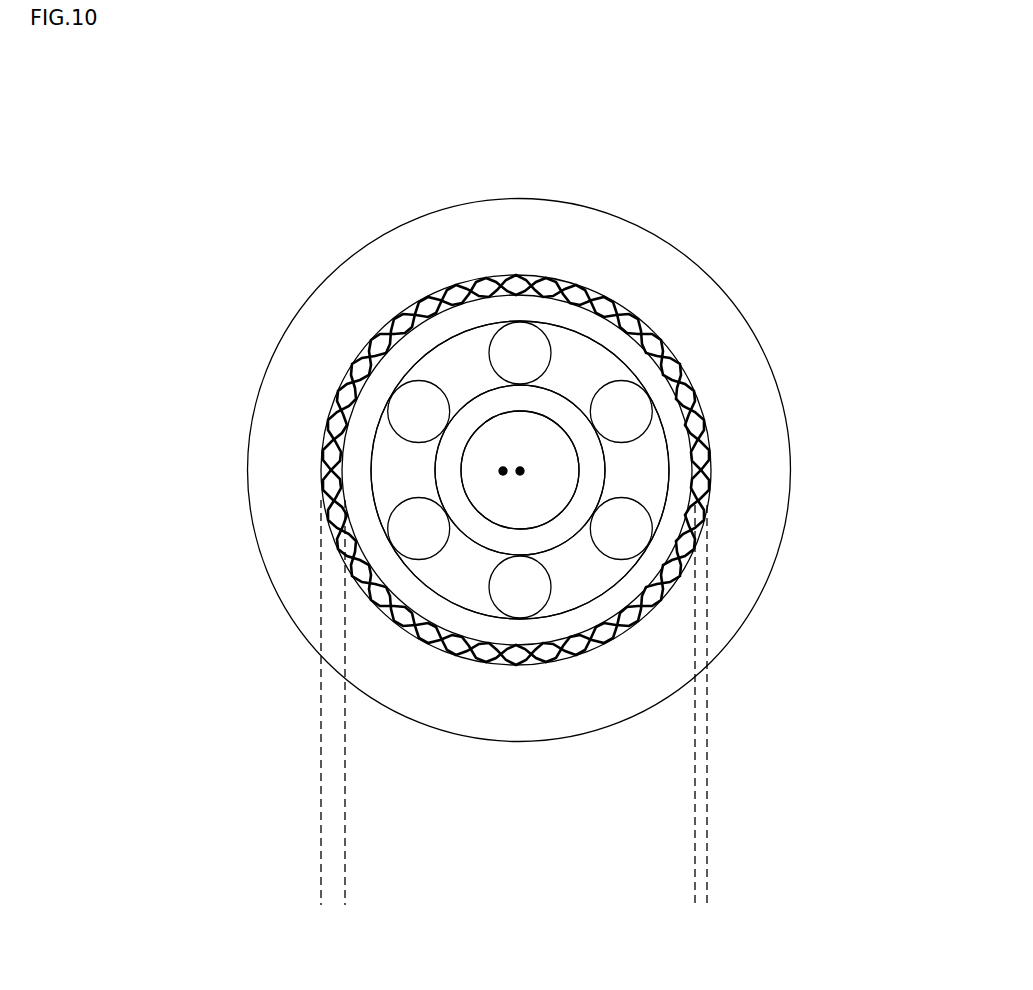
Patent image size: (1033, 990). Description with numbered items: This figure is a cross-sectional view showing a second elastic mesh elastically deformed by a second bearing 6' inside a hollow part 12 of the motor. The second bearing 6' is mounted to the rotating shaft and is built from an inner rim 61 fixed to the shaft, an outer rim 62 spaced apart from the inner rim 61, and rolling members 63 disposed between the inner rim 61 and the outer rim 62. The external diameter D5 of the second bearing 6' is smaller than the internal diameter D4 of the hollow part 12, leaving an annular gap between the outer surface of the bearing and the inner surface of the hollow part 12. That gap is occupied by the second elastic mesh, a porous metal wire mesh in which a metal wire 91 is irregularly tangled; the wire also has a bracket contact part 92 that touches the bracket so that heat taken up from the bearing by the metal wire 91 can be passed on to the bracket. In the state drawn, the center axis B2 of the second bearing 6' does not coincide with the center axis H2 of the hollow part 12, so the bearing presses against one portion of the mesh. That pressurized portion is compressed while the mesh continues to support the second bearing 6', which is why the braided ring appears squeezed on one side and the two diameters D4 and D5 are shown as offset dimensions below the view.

The hollow part 12 is at (775, 447).
The second bearing 6' is at (520, 344).
The inner rim 61 is at (561, 408).
The outer rim 62 is at (467, 318).
The rolling member 63 is at (520, 338).
The metal wire 91 is at (322, 445).
The bracket contact part 92 is at (322, 486).
The center axis of the hollow part H2 is at (503, 476).
The center axis of the second bearing B2 is at (520, 476).
The internal diameter of the hollow part D4 is at (695, 896).
The external diameter of the second bearing D5 is at (683, 856).